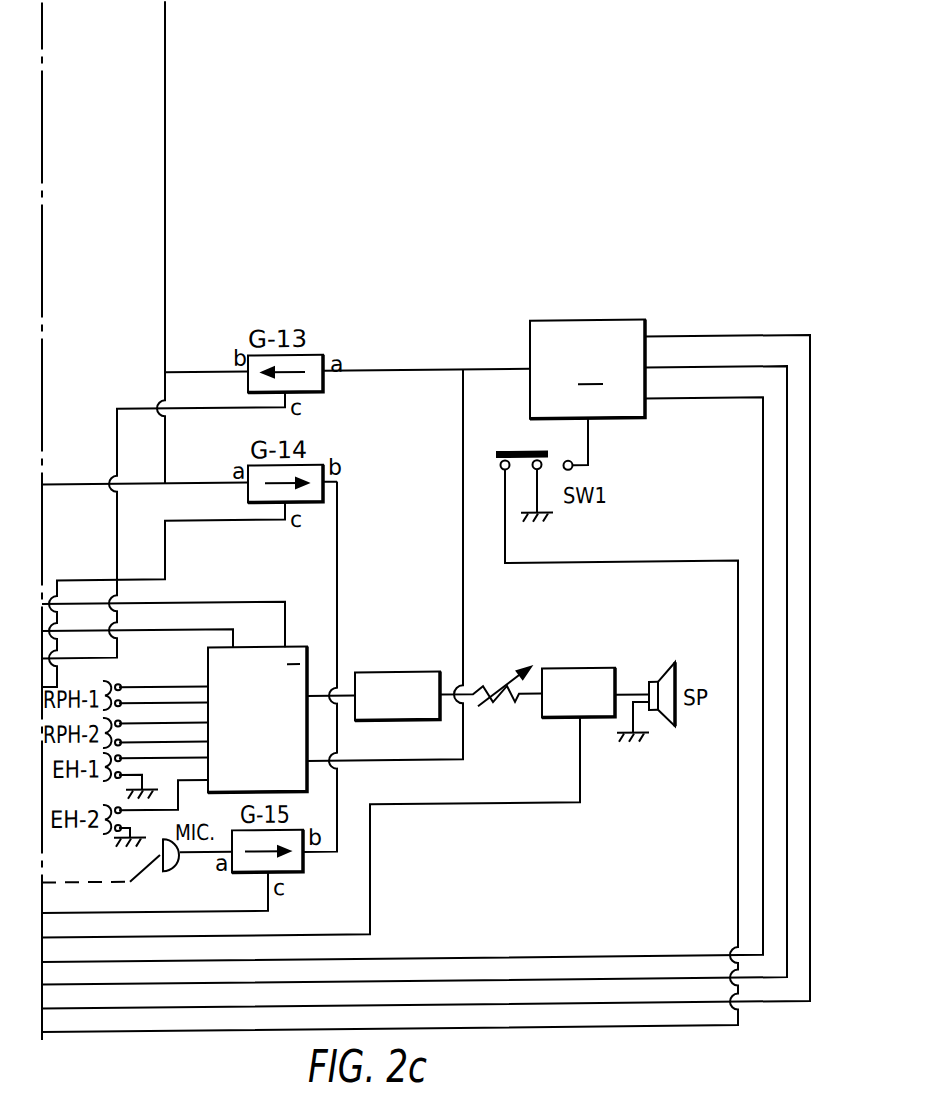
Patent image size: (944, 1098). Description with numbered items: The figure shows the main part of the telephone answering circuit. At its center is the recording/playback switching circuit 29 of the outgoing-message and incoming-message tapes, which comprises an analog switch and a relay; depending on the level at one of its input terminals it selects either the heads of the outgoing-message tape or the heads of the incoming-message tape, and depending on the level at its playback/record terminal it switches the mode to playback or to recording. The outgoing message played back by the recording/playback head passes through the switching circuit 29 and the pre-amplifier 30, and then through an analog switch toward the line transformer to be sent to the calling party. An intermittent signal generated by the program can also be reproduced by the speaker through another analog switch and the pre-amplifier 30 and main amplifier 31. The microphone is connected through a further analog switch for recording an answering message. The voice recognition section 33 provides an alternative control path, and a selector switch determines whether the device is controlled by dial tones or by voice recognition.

The recording/playback switching circuit 29 is at (257, 646).
The pre-amplifier 30 is at (364, 673).
The main amplifier 31 is at (557, 671).
The voice recognition section 33 is at (550, 323).